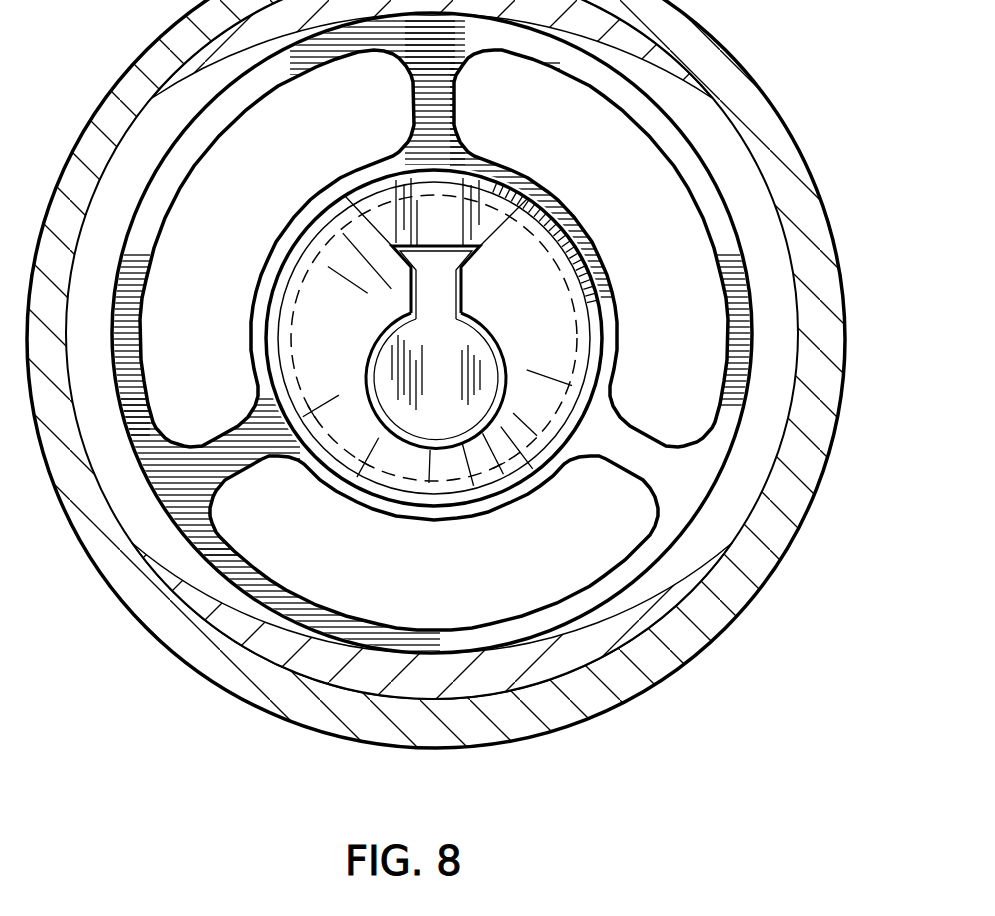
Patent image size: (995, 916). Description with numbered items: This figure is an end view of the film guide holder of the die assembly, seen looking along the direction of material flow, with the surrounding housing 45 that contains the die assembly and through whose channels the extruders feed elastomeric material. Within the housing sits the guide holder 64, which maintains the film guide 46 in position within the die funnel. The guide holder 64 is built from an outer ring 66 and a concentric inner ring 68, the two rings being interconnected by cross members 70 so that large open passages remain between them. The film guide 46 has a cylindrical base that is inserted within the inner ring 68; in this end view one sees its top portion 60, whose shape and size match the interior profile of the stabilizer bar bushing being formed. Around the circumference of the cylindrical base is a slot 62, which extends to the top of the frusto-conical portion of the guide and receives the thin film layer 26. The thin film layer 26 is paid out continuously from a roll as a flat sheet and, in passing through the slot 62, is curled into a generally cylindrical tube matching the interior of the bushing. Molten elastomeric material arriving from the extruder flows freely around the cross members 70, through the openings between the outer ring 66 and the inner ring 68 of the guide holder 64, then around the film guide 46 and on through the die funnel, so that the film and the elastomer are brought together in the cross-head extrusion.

The housing 45 is at (705, 58).
The guide holder 64 is at (722, 200).
The outer ring 66 is at (623, 580).
The cross members 70 is at (177, 493).
The inner ring 68 is at (321, 468).
The slot 62 is at (403, 468).
The thin film layer 26 is at (564, 398).
The top portion 60 is at (428, 347).
The film guide 46 is at (507, 352).